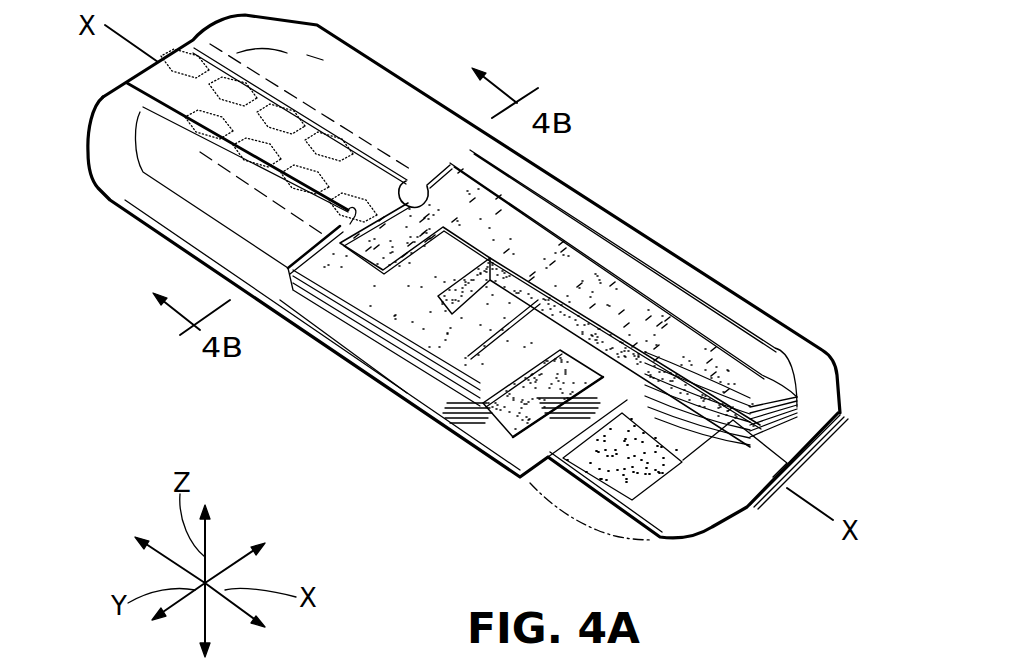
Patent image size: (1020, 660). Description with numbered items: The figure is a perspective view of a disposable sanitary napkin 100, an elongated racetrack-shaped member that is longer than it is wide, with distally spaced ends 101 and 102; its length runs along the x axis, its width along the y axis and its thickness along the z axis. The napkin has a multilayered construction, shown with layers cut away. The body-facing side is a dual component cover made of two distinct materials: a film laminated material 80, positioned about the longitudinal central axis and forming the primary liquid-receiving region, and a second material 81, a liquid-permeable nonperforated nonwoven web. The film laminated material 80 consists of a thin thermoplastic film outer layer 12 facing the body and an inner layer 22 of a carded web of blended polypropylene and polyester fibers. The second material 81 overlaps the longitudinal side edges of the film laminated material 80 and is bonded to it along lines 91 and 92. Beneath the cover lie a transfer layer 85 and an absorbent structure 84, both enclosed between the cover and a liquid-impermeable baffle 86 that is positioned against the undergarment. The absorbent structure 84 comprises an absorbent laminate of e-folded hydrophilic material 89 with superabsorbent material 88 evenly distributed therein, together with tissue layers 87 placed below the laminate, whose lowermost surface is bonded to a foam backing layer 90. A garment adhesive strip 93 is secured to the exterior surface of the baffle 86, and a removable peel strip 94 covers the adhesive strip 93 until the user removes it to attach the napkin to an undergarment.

The sanitary napkin 100 is at (660, 122).
The end 101 is at (818, 453).
The end 102 is at (133, 87).
The film laminated material 80 is at (190, 108).
The second material 81 is at (328, 72).
The bond line 91 is at (220, 163).
The bond line 92 is at (335, 118).
The outer layer 12 is at (410, 181).
The inner layer 22 is at (460, 210).
The hydrophilic material 89 is at (565, 250).
The superabsorbent material 88 is at (630, 272).
The transfer layer 85 is at (368, 262).
The absorbent structure 84 is at (423, 277).
The tissue layers 87 is at (457, 380).
The foam backing layer 90 is at (500, 423).
The baffle 86 is at (547, 460).
The garment adhesive strip 93 is at (650, 482).
The peel strip 94 is at (748, 508).